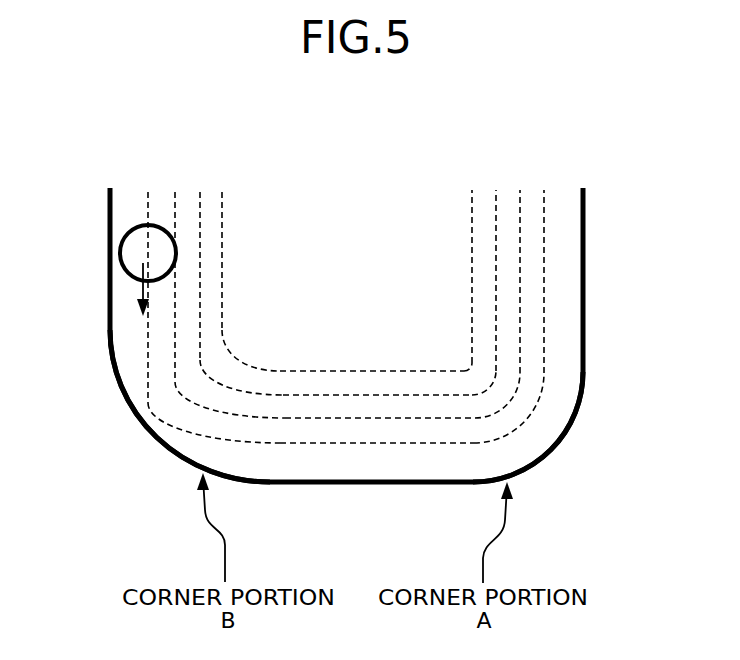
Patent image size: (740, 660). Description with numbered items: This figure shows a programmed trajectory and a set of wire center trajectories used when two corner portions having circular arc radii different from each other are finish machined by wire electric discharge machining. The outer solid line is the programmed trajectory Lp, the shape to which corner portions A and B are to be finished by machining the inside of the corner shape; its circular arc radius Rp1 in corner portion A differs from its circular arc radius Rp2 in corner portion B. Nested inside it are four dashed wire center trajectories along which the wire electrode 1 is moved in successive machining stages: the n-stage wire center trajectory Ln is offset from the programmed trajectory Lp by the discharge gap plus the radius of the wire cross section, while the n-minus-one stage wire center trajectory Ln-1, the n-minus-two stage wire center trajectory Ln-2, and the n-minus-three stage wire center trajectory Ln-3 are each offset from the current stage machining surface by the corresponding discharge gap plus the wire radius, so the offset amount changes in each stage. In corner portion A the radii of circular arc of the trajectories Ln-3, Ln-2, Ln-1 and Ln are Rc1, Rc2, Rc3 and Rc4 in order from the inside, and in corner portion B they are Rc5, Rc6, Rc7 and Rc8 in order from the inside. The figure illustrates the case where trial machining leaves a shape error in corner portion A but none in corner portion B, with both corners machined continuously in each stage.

The wire electrode 1 is at (125, 237).
The programmed trajectory Lp is at (583, 215).
The n-stage wire center trajectory Ln is at (544, 207).
The n-1 stage wire center trajectory Ln-1 is at (520, 207).
The n-2 stage wire center trajectory Ln-2 is at (496, 207).
The n-3 stage wire center trajectory Ln-3 is at (472, 208).
The circular arc radius of wire center trajectory Ln-3 in corner portion A Rc1 is at (474, 350).
The circular arc radius of wire center trajectory Ln-2 in corner portion A Rc2 is at (496, 371).
The circular arc radius of wire center trajectory Ln-1 in corner portion A Rc3 is at (508, 400).
The circular arc radius of wire center trajectory Ln in corner portion A Rc4 is at (524, 425).
The circular arc radius of wire center trajectory Ln-3 in corner portion B Rc5 is at (222, 330).
The circular arc radius of wire center trajectory Ln-2 in corner portion B Rc6 is at (200, 360).
The circular arc radius of wire center trajectory Ln-1 in corner portion B Rc7 is at (175, 382).
The circular arc radius of wire center trajectory Ln in corner portion B Rc8 is at (148, 403).
The circular arc radius of the programmed trajectory in corner portion A Rp1 is at (550, 452).
The circular arc radius of the programmed trajectory in corner portion B Rp2 is at (172, 450).